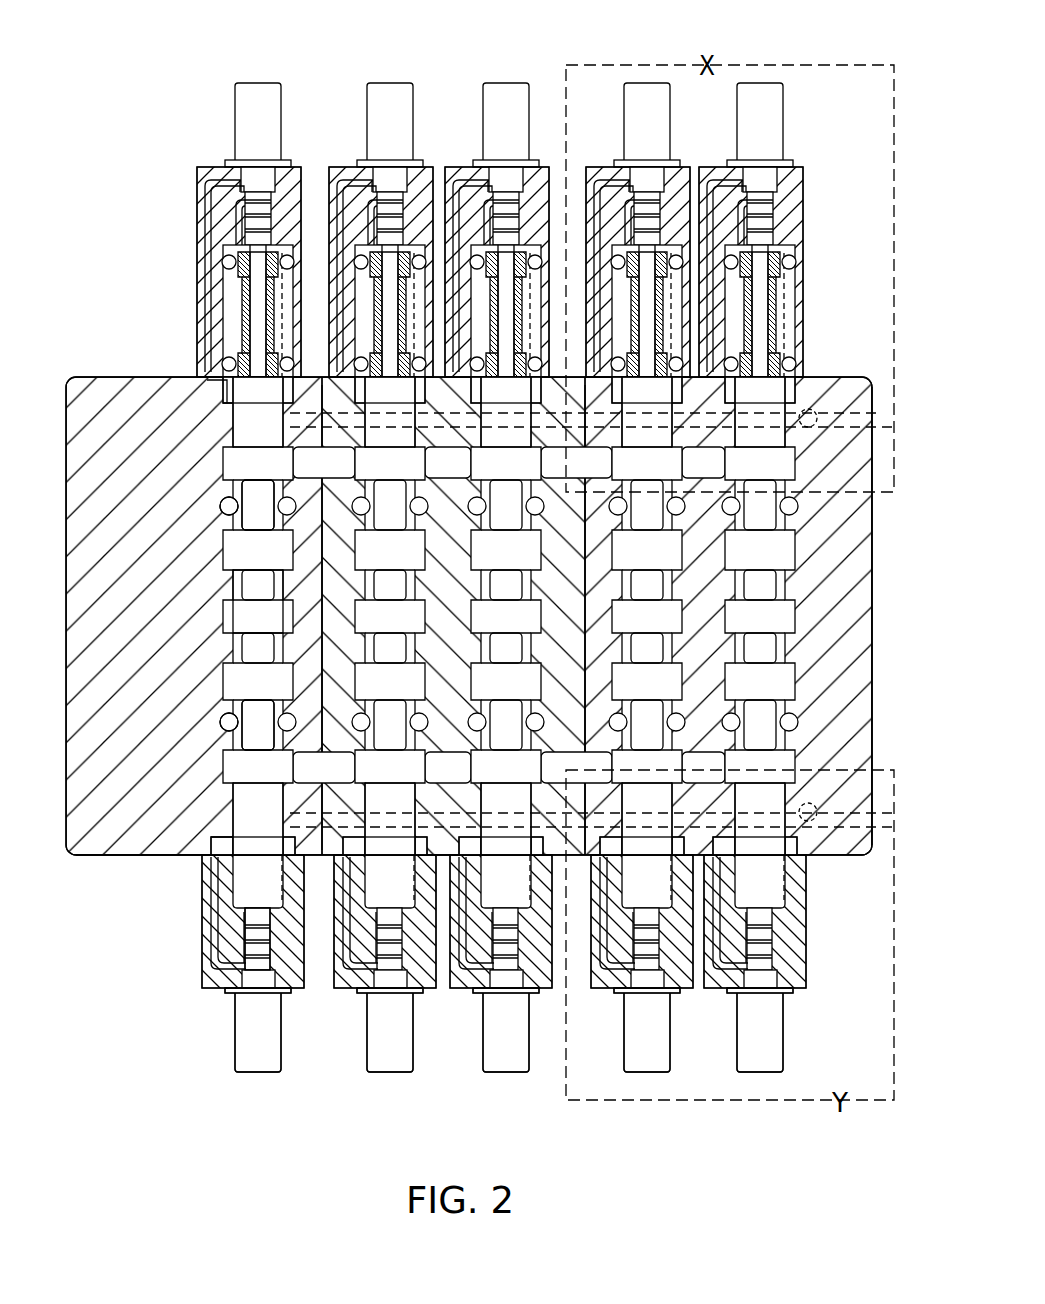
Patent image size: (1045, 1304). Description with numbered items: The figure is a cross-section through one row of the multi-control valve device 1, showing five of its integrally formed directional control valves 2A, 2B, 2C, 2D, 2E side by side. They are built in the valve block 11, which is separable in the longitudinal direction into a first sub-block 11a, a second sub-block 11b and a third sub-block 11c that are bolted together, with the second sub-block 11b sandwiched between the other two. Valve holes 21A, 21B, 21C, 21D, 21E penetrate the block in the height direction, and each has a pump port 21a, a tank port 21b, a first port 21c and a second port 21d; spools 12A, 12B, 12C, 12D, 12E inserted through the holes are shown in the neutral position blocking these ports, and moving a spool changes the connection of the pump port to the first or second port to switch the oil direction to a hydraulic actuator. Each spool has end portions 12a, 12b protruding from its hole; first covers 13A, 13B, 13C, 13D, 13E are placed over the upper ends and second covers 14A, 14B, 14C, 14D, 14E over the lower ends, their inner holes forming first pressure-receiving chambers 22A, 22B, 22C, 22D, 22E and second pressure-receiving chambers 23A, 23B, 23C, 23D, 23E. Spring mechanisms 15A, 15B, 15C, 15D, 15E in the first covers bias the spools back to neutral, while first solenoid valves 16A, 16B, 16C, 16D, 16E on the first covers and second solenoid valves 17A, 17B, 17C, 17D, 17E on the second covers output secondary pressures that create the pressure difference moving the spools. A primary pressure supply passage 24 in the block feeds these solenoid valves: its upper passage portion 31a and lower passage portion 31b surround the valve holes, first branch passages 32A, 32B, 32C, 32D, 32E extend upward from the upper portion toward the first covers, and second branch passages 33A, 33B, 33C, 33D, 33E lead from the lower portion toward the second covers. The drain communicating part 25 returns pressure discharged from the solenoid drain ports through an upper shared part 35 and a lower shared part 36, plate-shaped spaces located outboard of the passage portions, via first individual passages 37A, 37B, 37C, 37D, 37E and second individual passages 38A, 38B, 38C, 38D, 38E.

The multi-control valve device 1 is at (84, 108).
The directional control valve 2A is at (769, 1070).
The directional control valve 2B is at (656, 1070).
The directional control valve 2C is at (515, 1070).
The directional control valve 2D is at (399, 1070).
The directional control valve 2E is at (267, 1070).
The valve block 11 is at (82, 378).
The first sub-block 11a is at (872, 645).
The second sub-block 11b is at (443, 857).
The third sub-block 11c is at (128, 858).
The spool 12A is at (796, 616).
The spool 12B is at (622, 616).
The spool 12C is at (535, 616).
The spool 12D is at (367, 616).
The spool 12E is at (284, 616).
The end portion 12a is at (570, 572).
The end portion 12b is at (260, 868).
The first cover 13A is at (746, 225).
The first cover 13B is at (633, 225).
The first cover 13C is at (492, 225).
The first cover 13D is at (376, 225).
The first cover 13E is at (244, 225).
The second cover 14A is at (749, 942).
The second cover 14B is at (636, 942).
The second cover 14C is at (495, 942).
The second cover 14D is at (379, 942).
The second cover 14E is at (247, 942).
The spring mechanism 15A is at (797, 297).
The spring mechanism 15B is at (618, 313).
The spring mechanism 15C is at (525, 313).
The spring mechanism 15D is at (363, 313).
The spring mechanism 15E is at (215, 313).
The first solenoid valve 16A is at (758, 96).
The first solenoid valve 16B is at (645, 96).
The first solenoid valve 16C is at (504, 96).
The first solenoid valve 16D is at (388, 96).
The first solenoid valve 16E is at (256, 96).
The second solenoid valve 17A is at (759, 1057).
The second solenoid valve 17B is at (646, 1057).
The second solenoid valve 17C is at (505, 1057).
The second solenoid valve 17D is at (389, 1057).
The second solenoid valve 17E is at (257, 1057).
The valve hole 21A is at (795, 615).
The valve hole 21B is at (619, 615).
The valve hole 21C is at (534, 615).
The valve hole 21D is at (363, 615).
The valve hole 21E is at (285, 615).
The pump port 21a is at (229, 576).
The tank port 21b is at (221, 475).
The first port 21c is at (221, 528).
The second port 21d is at (221, 680).
The first pressure-receiving chamber 22A is at (778, 276).
The first pressure-receiving chamber 22B is at (593, 276).
The first pressure-receiving chamber 22C is at (516, 276).
The first pressure-receiving chamber 22D is at (338, 276).
The first pressure-receiving chamber 22E is at (195, 276).
The second pressure-receiving chamber 23A is at (790, 913).
The second pressure-receiving chamber 23B is at (596, 913).
The second pressure-receiving chamber 23C is at (521, 913).
The second pressure-receiving chamber 23D is at (340, 913).
The second pressure-receiving chamber 23E is at (198, 913).
The primary pressure supply passage 24 is at (894, 427).
The drain communicating part 25 is at (212, 395).
The upper passage portion 31a is at (816, 410).
The lower passage portion 31b is at (816, 818).
The first branch passage 32A is at (760, 393).
The first branch passage 32B is at (647, 393).
The first branch passage 32C is at (506, 393).
The first branch passage 32D is at (390, 393).
The first branch passage 32E is at (258, 393).
The second branch passage 33A is at (755, 845).
The second branch passage 33B is at (642, 845).
The second branch passage 33C is at (501, 845).
The second branch passage 33D is at (385, 845).
The second branch passage 33E is at (253, 845).
The upper shared part 35 is at (228, 422).
The lower shared part 36 is at (228, 838).
The first individual passage 37A is at (747, 413).
The first individual passage 37B is at (634, 413).
The first individual passage 37C is at (493, 413).
The first individual passage 37D is at (377, 413).
The first individual passage 37E is at (245, 413).
The second individual passage 38A is at (753, 816).
The second individual passage 38B is at (640, 816).
The second individual passage 38C is at (499, 816).
The second individual passage 38D is at (383, 816).
The second individual passage 38E is at (251, 816).